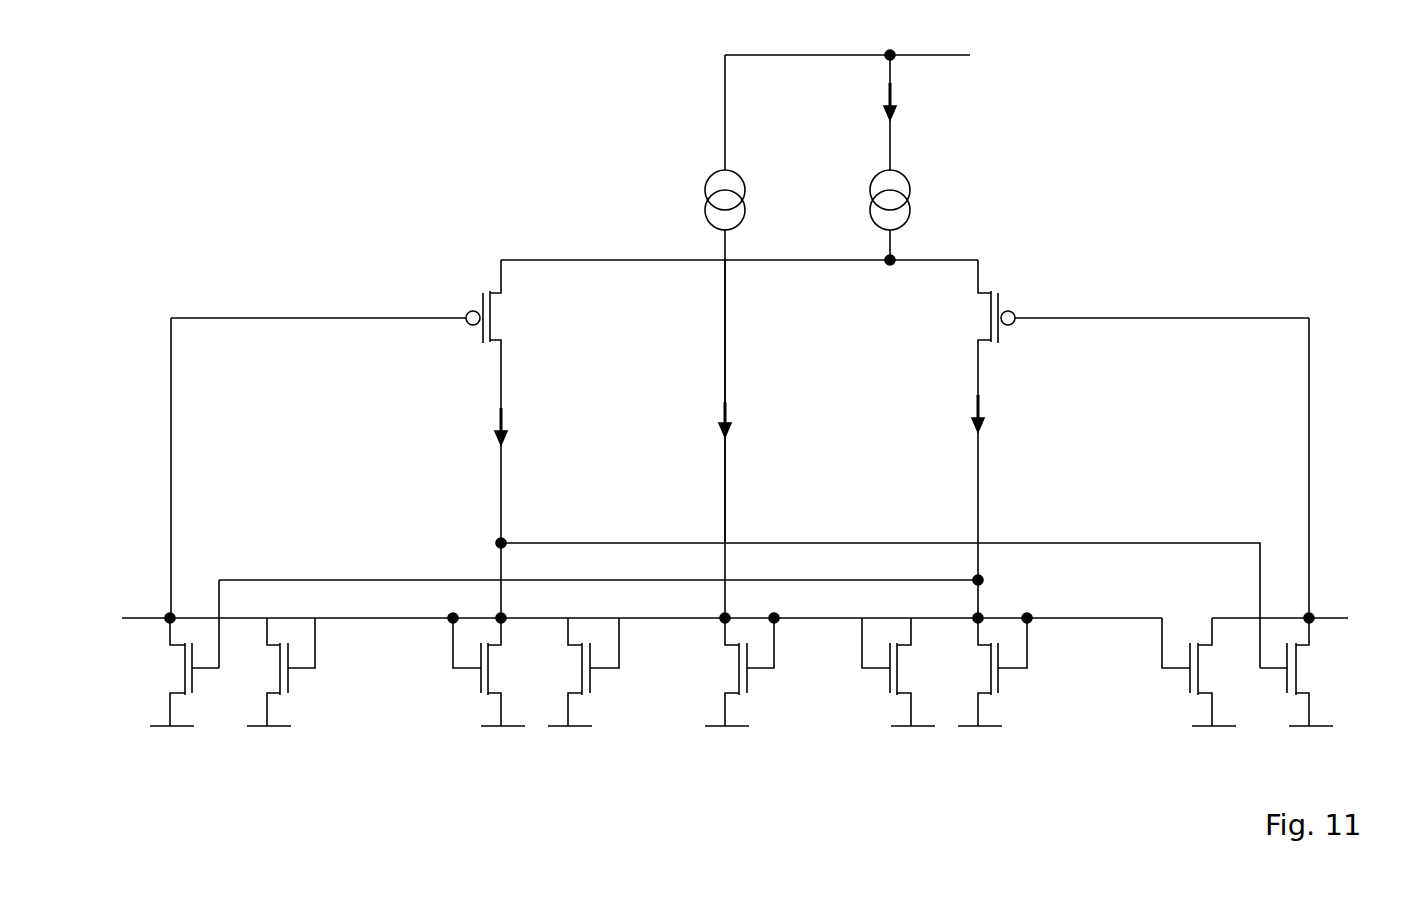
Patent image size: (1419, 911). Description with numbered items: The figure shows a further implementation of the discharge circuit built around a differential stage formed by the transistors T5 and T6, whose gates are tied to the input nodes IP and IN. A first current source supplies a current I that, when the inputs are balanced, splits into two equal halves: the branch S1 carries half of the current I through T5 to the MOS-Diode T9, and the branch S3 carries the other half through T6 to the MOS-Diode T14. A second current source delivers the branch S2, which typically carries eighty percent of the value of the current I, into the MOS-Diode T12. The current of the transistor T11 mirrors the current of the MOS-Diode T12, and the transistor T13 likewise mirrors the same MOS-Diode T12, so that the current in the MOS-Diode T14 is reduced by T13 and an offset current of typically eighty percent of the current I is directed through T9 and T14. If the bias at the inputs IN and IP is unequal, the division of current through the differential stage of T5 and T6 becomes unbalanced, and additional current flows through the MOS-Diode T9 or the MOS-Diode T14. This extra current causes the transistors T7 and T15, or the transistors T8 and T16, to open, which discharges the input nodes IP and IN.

The transistor of the differential stage T5 is at (368, 310).
The transistor of the differential stage T6 is at (1110, 310).
The transistor T7 is at (194, 672).
The transistor T8 is at (286, 676).
The MOS-Diode T9 is at (478, 672).
The transistor T11 is at (601, 672).
The MOS-Diode T12 is at (757, 672).
The transistor T13 is at (882, 672).
The MOS-Diode T14 is at (1012, 672).
The transistor T15 is at (1186, 672).
The transistor T16 is at (1284, 672).
The first branch current S1 is at (509, 451).
The second branch current S2 is at (733, 401).
The third branch current S3 is at (987, 451).
The current I is at (900, 99).
The input node IP is at (617, 621).
The input node IN is at (1305, 612).